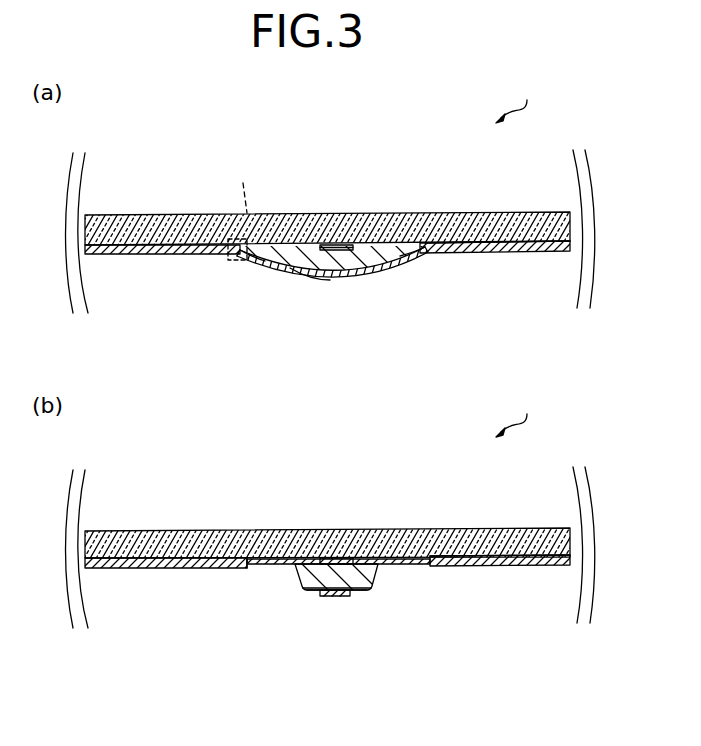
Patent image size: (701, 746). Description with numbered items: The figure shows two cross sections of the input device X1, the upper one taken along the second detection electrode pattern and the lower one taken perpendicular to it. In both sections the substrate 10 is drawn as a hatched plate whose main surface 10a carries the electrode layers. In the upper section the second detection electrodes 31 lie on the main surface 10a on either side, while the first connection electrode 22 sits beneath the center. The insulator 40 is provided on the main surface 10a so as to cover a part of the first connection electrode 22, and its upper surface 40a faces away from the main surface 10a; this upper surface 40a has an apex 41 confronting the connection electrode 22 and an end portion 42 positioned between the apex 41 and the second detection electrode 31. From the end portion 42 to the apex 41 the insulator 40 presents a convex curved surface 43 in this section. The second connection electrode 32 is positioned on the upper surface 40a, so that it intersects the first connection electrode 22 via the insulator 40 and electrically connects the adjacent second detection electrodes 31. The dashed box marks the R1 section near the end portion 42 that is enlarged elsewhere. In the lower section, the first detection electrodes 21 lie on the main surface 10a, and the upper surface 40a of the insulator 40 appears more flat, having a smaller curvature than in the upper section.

The substrate 10 is at (453, 227).
The main surface 10a is at (530, 241).
The first detection electrode 21 is at (170, 569).
The first connection electrode 22 is at (338, 244).
The second detection electrode 31 is at (170, 255).
The second connection electrode 32 is at (302, 273).
The insulator 40 is at (355, 262).
The upper surface 40a is at (402, 255).
The apex 41 is at (337, 266).
The end portion 42 is at (243, 259).
The convex curved surface 43 is at (265, 258).
The R1 section R1 is at (245, 185).
The input device X1 is at (539, 95).